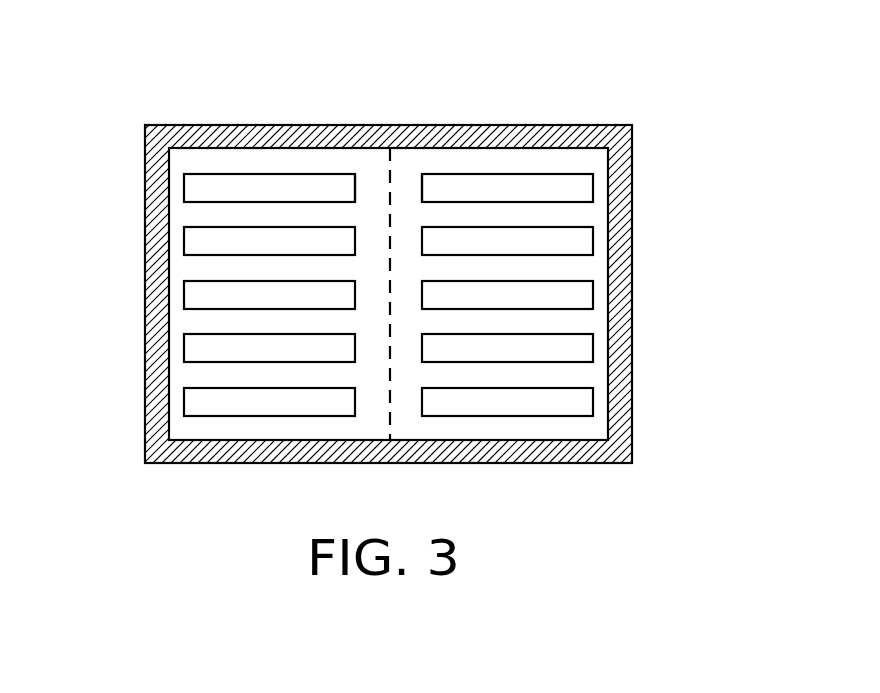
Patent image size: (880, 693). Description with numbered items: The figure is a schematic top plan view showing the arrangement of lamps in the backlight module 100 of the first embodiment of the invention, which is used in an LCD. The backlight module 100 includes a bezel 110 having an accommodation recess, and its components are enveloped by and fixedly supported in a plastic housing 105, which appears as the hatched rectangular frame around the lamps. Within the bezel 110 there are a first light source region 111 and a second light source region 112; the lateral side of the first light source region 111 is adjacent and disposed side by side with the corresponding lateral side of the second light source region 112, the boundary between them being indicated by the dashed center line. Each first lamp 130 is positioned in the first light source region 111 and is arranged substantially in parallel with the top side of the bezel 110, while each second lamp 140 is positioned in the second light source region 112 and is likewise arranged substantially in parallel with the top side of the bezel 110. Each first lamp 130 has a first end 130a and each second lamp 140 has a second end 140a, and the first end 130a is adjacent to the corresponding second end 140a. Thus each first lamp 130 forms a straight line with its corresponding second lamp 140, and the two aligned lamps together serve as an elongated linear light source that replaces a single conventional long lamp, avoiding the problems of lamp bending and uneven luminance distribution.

The backlight module 100 is at (732, 37).
The plastic housing 105 is at (630, 452).
The bezel 110 is at (593, 155).
The first light source region 111 is at (208, 227).
The second light source region 112 is at (578, 226).
The first lamp 130 is at (200, 192).
The first end 130a is at (355, 188).
The second lamp 140 is at (583, 186).
The second end 140a is at (427, 188).